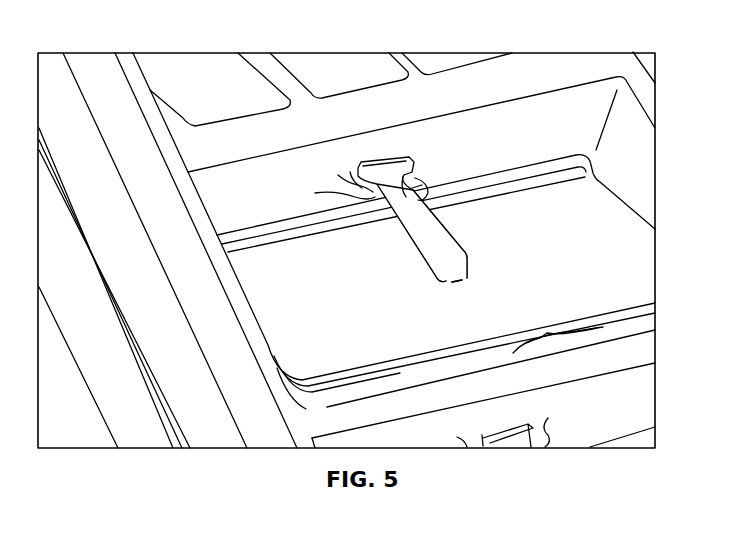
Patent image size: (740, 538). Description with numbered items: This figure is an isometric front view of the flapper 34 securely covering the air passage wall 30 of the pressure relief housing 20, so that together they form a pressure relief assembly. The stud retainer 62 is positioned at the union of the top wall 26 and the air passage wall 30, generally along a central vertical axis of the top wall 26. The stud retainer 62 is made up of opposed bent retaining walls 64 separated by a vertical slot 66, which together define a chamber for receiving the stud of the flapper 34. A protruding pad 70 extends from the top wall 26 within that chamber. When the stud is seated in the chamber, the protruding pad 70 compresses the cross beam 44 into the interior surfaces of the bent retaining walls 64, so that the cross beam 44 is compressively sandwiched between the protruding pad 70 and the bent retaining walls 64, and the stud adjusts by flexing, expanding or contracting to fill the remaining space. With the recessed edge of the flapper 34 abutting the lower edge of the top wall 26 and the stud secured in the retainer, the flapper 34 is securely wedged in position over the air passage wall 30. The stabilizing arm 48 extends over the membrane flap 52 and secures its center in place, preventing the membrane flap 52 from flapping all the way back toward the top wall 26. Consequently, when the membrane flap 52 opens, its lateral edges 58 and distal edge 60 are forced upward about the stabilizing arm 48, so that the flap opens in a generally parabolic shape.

The pressure relief housing 20 is at (480, 31).
The top wall 26 is at (247, 182).
The air passage wall 30 is at (555, 333).
The flapper 34 is at (610, 232).
The cross beam 44 is at (402, 168).
The stabilizing arm 48 is at (427, 258).
The membrane flap 52 is at (620, 255).
The lateral edges 58 is at (269, 352).
The distal edge 60 is at (488, 345).
The stud retainer 62 is at (362, 192).
The bent retaining walls 64 is at (350, 172).
The vertical slot 66 is at (418, 176).
The protruding pad 70 is at (388, 160).